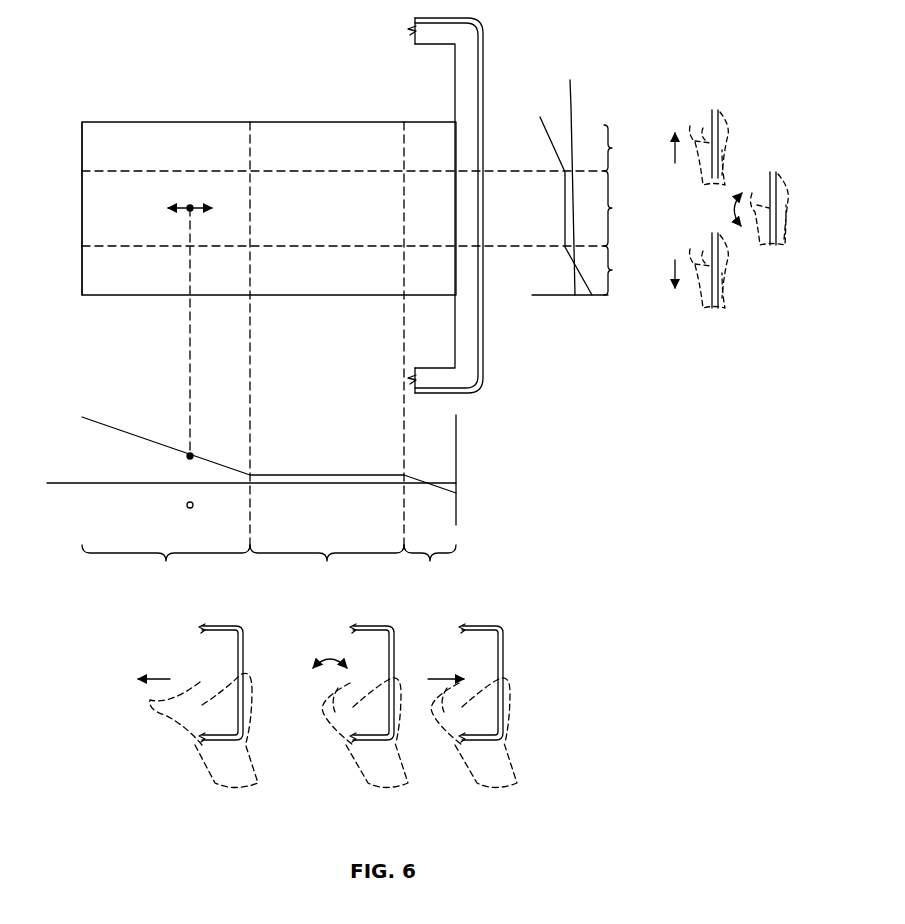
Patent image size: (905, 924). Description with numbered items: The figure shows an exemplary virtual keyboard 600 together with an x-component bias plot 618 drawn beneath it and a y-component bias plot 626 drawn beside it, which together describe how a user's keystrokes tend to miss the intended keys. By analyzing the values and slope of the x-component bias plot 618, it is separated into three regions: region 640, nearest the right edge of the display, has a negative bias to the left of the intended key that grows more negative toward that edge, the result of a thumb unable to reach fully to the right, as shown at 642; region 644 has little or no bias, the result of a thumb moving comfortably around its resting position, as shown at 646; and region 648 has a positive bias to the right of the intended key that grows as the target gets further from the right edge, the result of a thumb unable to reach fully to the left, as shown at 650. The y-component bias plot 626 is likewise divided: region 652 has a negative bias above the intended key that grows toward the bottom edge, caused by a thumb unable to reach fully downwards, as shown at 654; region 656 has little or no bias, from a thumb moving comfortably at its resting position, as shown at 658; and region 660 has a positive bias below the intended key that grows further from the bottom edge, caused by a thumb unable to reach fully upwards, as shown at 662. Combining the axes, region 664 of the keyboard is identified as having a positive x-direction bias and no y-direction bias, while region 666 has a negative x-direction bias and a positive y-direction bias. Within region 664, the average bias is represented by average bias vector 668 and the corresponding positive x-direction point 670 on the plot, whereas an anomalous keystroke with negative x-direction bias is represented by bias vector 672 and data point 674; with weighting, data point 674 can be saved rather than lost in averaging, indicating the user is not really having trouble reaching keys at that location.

The virtual keyboard 600 is at (143, 121).
The region 664 is at (88, 210).
The region 666 is at (435, 137).
The bias vector 672 is at (182, 208).
The average bias vector 668 is at (204, 208).
The point 670 is at (187, 457).
The data point 674 is at (187, 507).
The x-component bias plot 618 is at (457, 503).
The y-component bias plot 626 is at (558, 296).
The region 660 is at (632, 148).
The region 656 is at (632, 208).
The region 652 is at (632, 270).
The thumb unable to reach fully upwards 662 is at (730, 147).
The thumb moving comfortably around its resting position 658 is at (778, 247).
The thumb unable to reach fully downwards 654 is at (708, 310).
The thumb unable to reach fully to the left 650 is at (202, 752).
The thumb moving comfortably around its resting position 646 is at (350, 745).
The thumb unable to reach fully to the right 642 is at (510, 730).
The region 648 is at (166, 573).
The region 644 is at (327, 573).
The region 640 is at (430, 573).